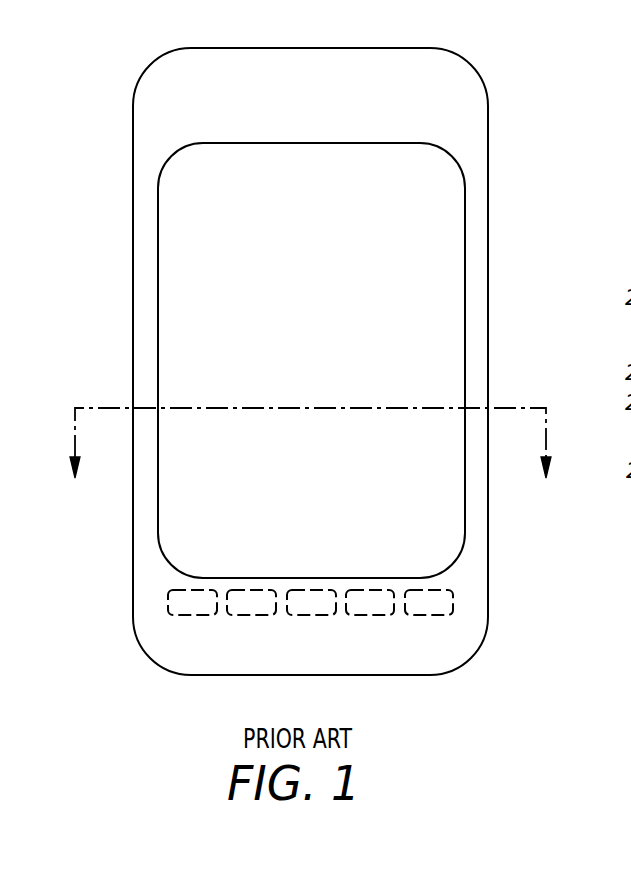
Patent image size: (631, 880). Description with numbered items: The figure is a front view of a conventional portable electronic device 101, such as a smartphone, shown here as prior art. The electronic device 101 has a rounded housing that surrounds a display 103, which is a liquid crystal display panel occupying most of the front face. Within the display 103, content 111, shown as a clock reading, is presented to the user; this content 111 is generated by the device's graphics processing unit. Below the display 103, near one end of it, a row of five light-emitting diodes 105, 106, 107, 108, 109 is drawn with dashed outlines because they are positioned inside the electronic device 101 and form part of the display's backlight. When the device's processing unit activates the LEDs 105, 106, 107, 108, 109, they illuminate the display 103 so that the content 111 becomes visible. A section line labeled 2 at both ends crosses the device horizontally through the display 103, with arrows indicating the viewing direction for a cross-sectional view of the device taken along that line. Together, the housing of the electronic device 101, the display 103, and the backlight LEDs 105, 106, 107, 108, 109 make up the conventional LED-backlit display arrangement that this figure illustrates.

The electronic device 101 is at (567, 75).
The display 103 is at (368, 382).
The content 111 is at (363, 278).
The LED 105 is at (195, 615).
The LED 106 is at (252, 615).
The LED 107 is at (310, 615).
The LED 108 is at (367, 615).
The LED 109 is at (427, 615).
The section line 2- 2 is at (310, 459).